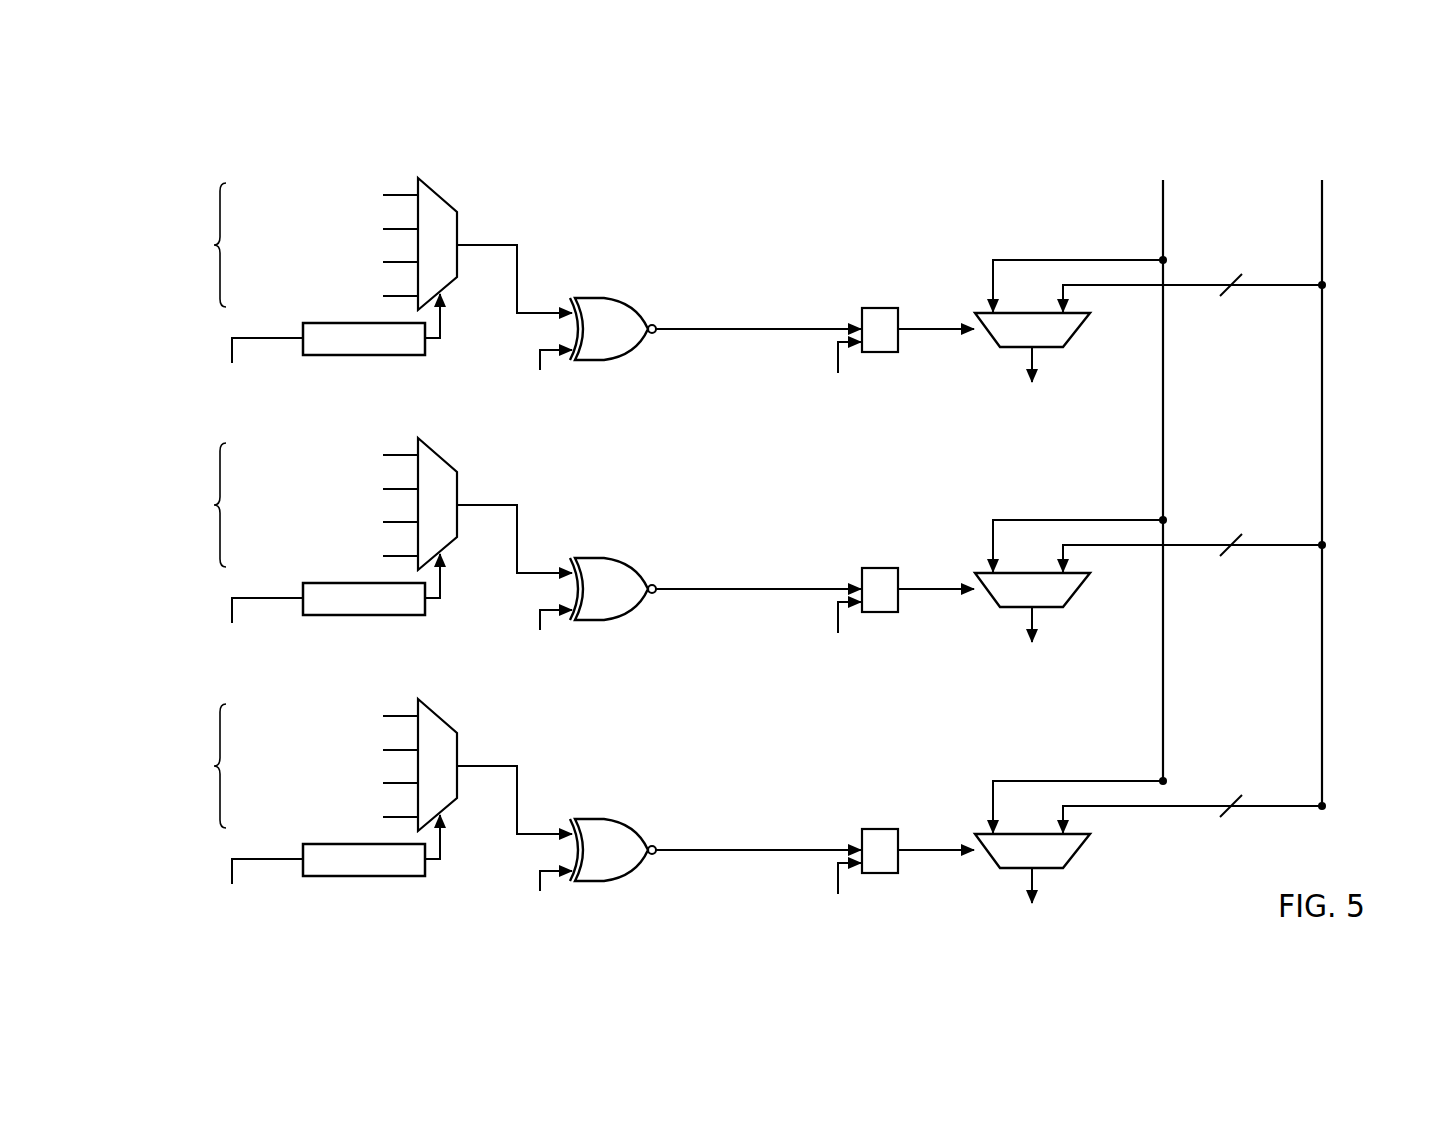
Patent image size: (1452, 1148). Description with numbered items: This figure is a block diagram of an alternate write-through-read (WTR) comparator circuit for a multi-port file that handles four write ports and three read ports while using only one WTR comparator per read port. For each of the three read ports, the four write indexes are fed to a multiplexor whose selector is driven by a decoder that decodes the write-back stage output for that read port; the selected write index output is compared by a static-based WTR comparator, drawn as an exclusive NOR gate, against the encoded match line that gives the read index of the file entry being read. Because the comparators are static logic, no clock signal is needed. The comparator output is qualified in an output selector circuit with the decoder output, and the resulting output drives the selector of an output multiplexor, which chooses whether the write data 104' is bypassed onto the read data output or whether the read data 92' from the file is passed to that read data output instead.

The write data 104' is at (1151, 469).
The read data 92' is at (1352, 481).